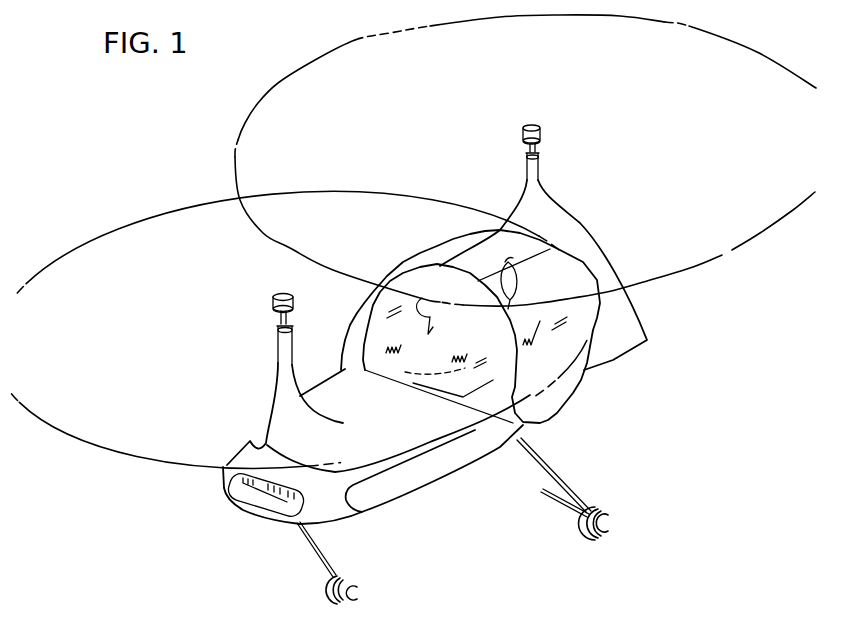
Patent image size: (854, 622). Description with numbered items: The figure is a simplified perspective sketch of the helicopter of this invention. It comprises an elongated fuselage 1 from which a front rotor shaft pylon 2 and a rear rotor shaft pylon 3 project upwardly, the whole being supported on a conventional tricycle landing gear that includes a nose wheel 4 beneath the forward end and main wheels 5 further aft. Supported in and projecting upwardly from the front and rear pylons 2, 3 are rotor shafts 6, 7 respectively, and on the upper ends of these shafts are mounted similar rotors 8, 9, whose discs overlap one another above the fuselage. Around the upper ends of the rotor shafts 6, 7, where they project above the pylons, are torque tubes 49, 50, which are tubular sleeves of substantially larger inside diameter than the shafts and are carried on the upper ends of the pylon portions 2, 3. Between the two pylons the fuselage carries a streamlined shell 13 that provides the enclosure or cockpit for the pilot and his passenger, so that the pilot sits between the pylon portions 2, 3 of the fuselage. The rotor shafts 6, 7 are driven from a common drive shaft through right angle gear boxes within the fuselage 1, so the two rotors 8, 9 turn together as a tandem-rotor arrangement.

The fuselage 1 is at (447, 482).
The front rotor shaft pylon 2 is at (283, 413).
The rear rotor shaft pylon 3 is at (564, 218).
The nose wheel 4 is at (358, 586).
The main wheels 5 is at (607, 518).
The front rotor shaft 6 is at (270, 316).
The rear rotor shaft 7 is at (558, 140).
The front rotor 8 is at (166, 203).
The rear rotor 9 is at (308, 61).
The streamlined shell 13 is at (565, 395).
The front torque tube 49 is at (283, 360).
The rear torque tube 50 is at (540, 178).